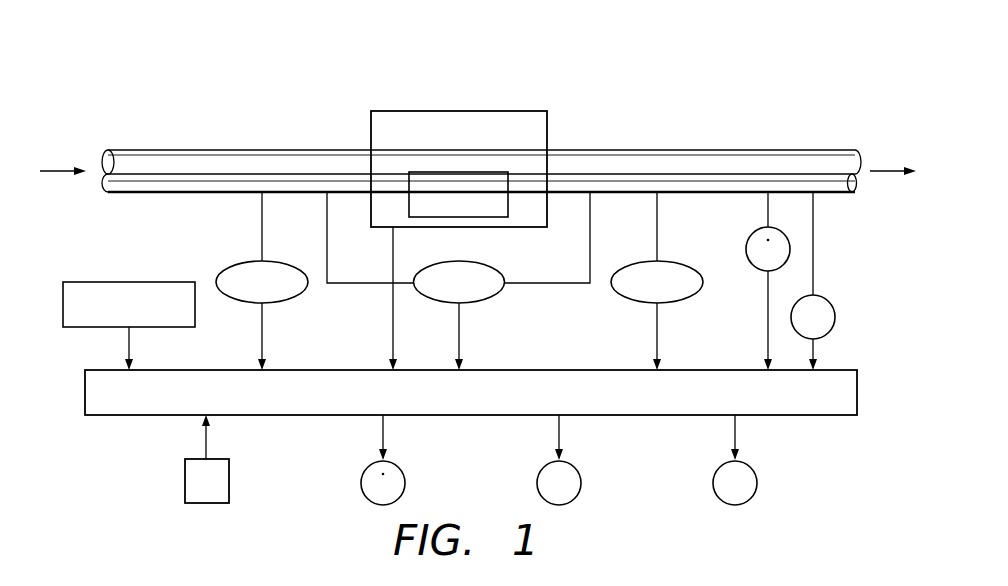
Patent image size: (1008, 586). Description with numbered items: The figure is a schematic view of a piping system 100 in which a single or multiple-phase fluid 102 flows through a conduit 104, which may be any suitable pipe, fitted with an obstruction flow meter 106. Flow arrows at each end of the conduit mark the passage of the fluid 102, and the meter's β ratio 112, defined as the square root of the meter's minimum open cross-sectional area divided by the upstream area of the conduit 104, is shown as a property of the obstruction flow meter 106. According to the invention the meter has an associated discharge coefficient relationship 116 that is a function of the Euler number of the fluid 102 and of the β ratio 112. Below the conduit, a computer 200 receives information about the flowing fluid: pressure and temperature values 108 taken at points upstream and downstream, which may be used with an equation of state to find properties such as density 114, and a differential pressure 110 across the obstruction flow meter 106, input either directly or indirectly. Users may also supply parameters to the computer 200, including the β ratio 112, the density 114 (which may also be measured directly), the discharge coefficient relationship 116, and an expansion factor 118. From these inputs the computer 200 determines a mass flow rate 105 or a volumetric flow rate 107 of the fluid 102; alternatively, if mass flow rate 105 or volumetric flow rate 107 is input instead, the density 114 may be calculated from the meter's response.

The piping system 100 is at (284, 52).
The fluid 102 is at (57, 168).
The conduit 104 is at (241, 149).
The mass flow rate 105 is at (746, 249).
The obstruction flow meter 106 is at (427, 110).
The volumetric flow rate 107 is at (757, 484).
The pressure and temperature values 108 is at (292, 302).
The differential pressure 110 is at (488, 302).
The β ratio 112 is at (459, 171).
The density 114 is at (835, 317).
The discharge coefficient relationship 116 is at (128, 281).
The expansion factor 118 is at (184, 483).
The computer 200 is at (857, 394).